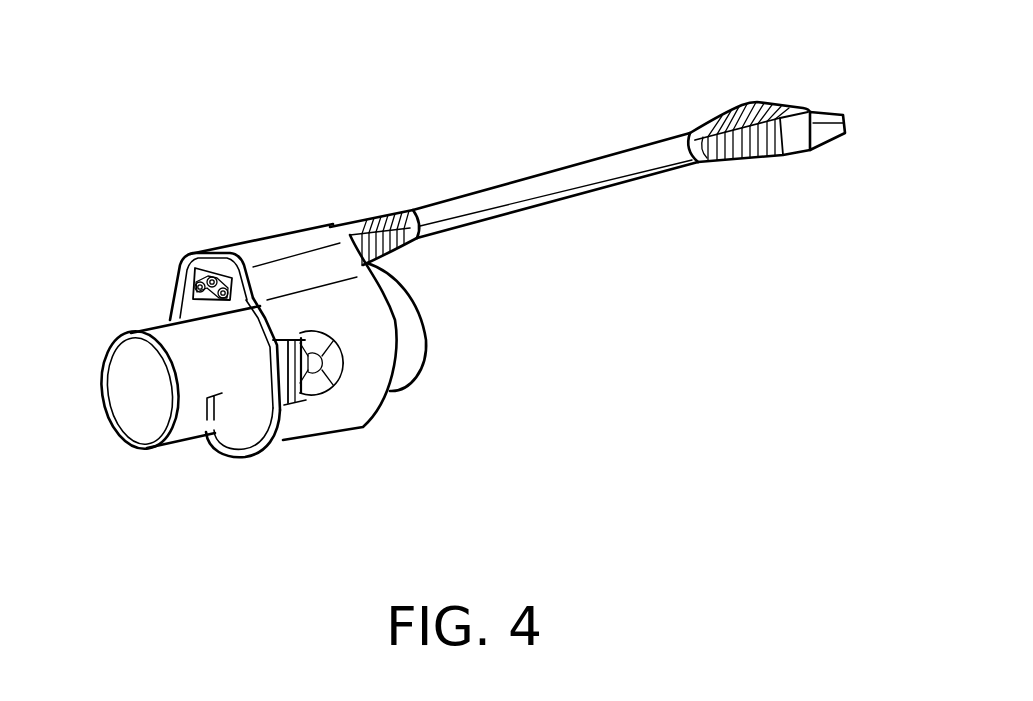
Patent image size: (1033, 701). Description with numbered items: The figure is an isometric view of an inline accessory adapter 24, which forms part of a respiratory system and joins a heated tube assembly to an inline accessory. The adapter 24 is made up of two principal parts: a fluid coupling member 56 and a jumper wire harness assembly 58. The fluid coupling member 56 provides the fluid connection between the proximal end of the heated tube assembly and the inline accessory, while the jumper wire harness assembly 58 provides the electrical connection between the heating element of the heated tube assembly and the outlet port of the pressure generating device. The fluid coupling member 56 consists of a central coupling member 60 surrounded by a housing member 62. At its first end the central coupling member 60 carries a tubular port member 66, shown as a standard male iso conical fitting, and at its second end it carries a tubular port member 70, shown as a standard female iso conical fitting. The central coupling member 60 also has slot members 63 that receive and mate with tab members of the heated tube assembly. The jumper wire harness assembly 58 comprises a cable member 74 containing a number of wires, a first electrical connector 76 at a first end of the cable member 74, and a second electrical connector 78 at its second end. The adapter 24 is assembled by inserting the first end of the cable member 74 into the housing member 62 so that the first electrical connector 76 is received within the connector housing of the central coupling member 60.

The inline accessory adapter 24 is at (191, 149).
The fluid coupling member 56 is at (284, 443).
The jumper wire harness assembly 58 is at (514, 186).
The central coupling member 60 is at (146, 417).
The housing member 62 is at (363, 406).
The slot members 63 is at (306, 374).
The tubular port member 66 is at (127, 375).
The tubular port member 70 is at (424, 334).
The cable member 74 is at (592, 185).
The first electrical connector 76 is at (198, 288).
The second electrical connector 78 is at (753, 100).